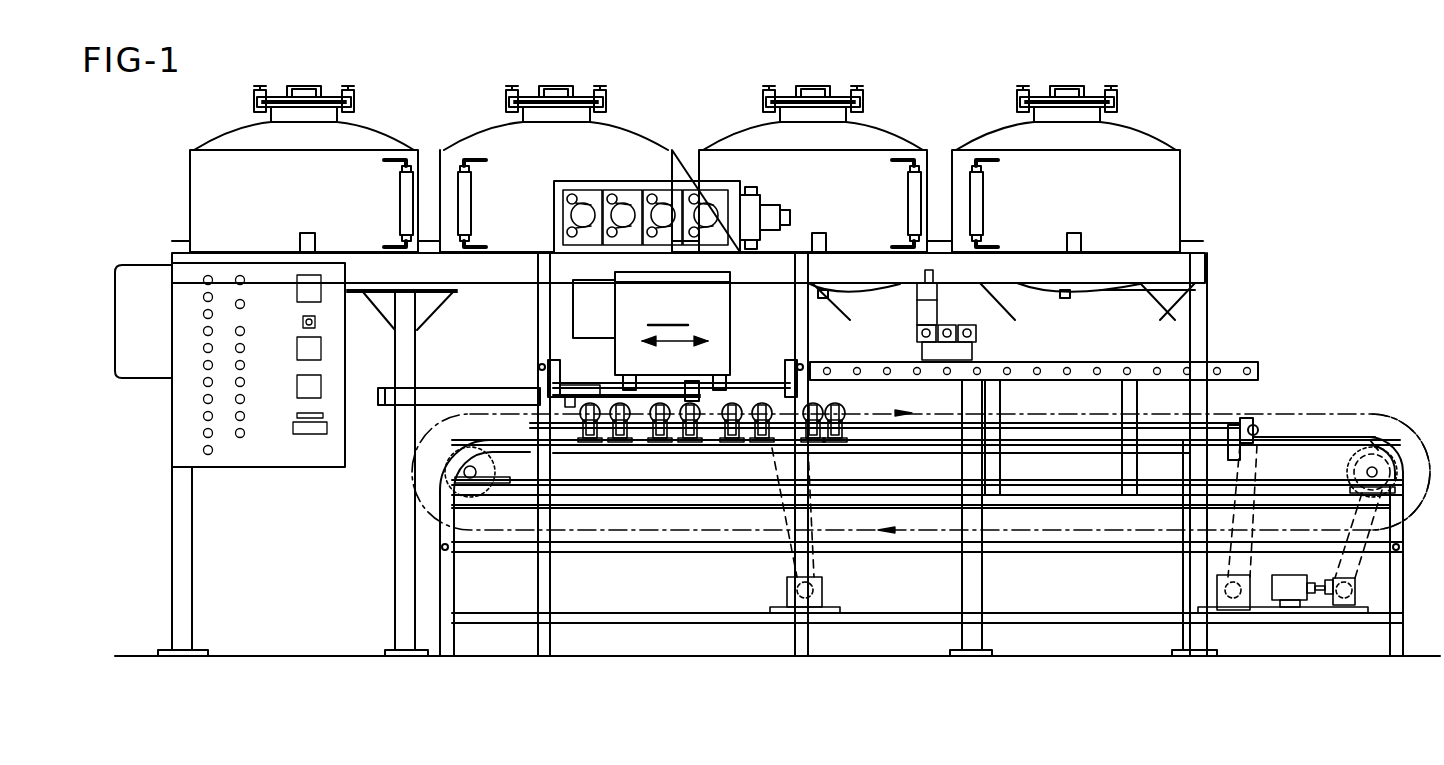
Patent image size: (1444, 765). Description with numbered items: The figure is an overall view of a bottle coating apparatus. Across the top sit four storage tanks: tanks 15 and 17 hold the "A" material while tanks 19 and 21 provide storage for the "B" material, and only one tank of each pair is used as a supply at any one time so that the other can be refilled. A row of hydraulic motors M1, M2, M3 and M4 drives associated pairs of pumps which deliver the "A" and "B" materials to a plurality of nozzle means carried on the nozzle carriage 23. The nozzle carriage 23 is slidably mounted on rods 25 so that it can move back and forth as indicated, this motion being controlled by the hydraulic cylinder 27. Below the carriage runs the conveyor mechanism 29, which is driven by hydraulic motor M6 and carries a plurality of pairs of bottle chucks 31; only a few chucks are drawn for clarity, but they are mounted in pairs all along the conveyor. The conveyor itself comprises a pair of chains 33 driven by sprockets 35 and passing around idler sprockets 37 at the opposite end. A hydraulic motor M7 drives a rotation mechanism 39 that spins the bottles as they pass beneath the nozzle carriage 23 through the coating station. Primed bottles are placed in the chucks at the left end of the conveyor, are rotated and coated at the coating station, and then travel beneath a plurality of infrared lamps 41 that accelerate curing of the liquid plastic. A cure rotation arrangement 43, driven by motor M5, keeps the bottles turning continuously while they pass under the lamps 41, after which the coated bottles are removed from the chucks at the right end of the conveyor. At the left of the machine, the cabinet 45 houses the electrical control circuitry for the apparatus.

The tank 15 is at (357, 138).
The tank 17 is at (497, 137).
The tank 19 is at (870, 138).
The tank 21 is at (1003, 137).
The hydraulic motor M1 is at (572, 216).
The hydraulic motor M2 is at (630, 212).
The hydraulic motor M3 is at (677, 212).
The hydraulic motor M4 is at (712, 212).
The nozzle carriage 23 is at (651, 331).
The rods 25 is at (575, 388).
The hydraulic cylinder 27 is at (448, 400).
The conveyor mechanism 29 is at (1352, 445).
The bottle chucks 31 is at (833, 440).
The chains 33 is at (1288, 434).
The sprockets 35 is at (1363, 447).
The idler sprockets 37 is at (448, 466).
The rotation mechanism 39 is at (717, 417).
The infrared lamps 41 is at (1072, 366).
The cure rotation arrangement 43 is at (1020, 425).
The cabinet 45 is at (185, 437).
The motor M5 is at (1237, 608).
The hydraulic motor M6 is at (1296, 592).
The hydraulic motor M7 is at (820, 595).